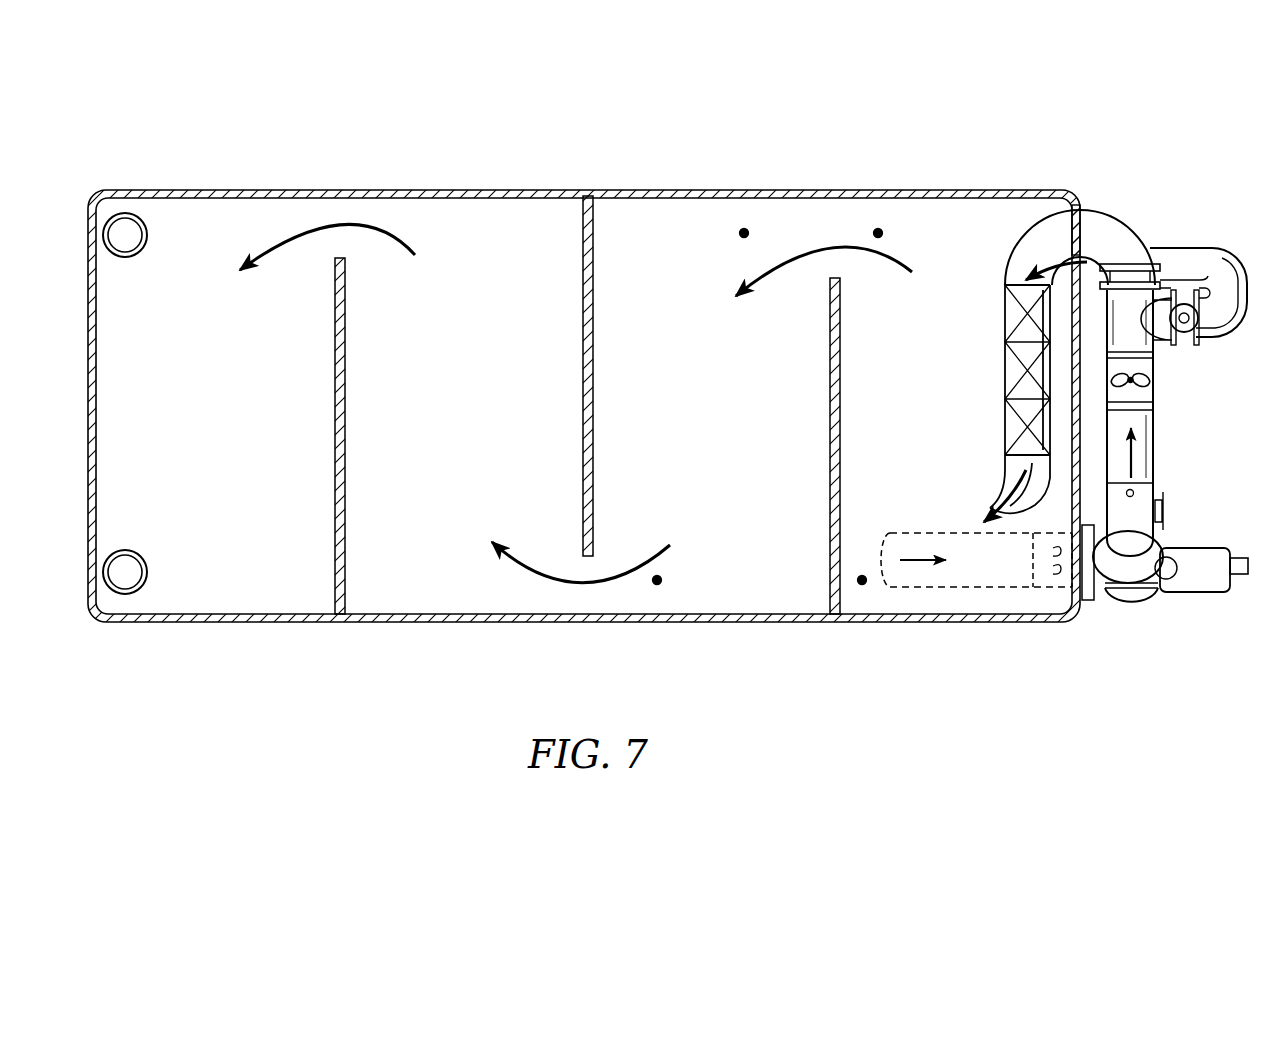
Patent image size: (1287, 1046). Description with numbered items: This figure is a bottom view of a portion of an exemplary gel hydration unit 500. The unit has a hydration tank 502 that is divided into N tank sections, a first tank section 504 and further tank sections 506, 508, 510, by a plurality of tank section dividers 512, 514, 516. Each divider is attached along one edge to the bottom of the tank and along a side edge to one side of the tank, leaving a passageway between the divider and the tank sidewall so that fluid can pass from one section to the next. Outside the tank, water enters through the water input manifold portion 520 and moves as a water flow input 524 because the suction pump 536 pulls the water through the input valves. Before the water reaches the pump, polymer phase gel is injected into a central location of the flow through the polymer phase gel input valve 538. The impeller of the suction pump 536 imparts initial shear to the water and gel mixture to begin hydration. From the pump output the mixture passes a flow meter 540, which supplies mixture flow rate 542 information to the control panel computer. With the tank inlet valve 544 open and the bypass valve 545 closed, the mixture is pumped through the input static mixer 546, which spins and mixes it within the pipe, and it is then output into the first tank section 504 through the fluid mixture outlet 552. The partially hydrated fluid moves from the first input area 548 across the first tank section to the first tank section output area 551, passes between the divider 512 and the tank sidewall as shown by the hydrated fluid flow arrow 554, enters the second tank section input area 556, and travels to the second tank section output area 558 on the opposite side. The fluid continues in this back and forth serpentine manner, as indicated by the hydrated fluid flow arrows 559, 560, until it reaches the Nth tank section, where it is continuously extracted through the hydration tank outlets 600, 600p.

The gel hydration unit 500 is at (378, 96).
The hydration tank 502 is at (1014, 190).
The first tank section 504 is at (862, 456).
The tank section 506 is at (758, 584).
The tank section 508 is at (420, 584).
The tank section 510 is at (232, 584).
The tank section divider 512 is at (830, 398).
The tank section divider 514 is at (583, 330).
The tank section divider 516 is at (335, 372).
The water input manifold portion 520 is at (978, 588).
The water flow input 524 is at (914, 552).
The suction pump 536 is at (1130, 614).
The polymer phase gel input valve 538 is at (1035, 560).
The flow meter 540 is at (1150, 378).
The mixture flow rate 542 is at (1134, 450).
The tank inlet valve 544 is at (1127, 262).
The bypass valve 545 is at (1186, 347).
The input static mixer 546 is at (1005, 364).
The first input area 548 is at (856, 588).
The first tank section output area 551 is at (880, 232).
The fluid mixture outlet 552 is at (1008, 462).
The hydrated fluid flow arrow 554 is at (780, 262).
The second tank section input area 556 is at (742, 232).
The second tank section output area 558 is at (660, 578).
The hydrated fluid flow arrow 559 is at (528, 568).
The hydrated fluid flow arrow 560 is at (282, 244).
The hydration tank outlet 600 is at (134, 560).
The hydration tank outlet 600p is at (134, 250).